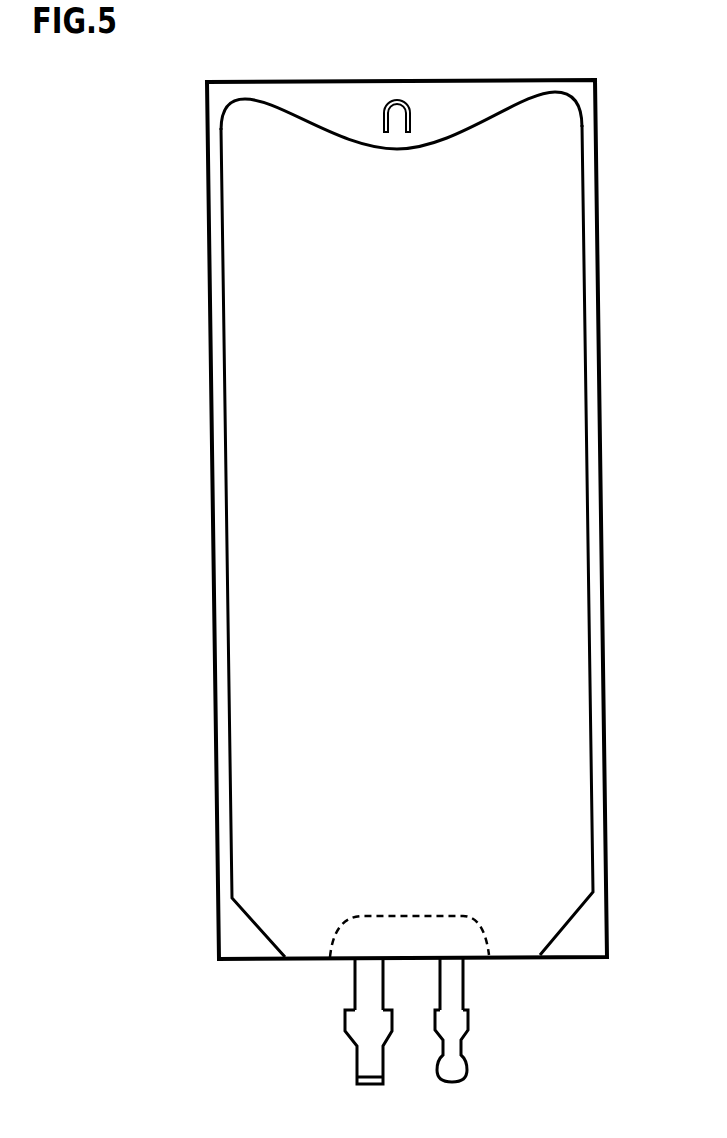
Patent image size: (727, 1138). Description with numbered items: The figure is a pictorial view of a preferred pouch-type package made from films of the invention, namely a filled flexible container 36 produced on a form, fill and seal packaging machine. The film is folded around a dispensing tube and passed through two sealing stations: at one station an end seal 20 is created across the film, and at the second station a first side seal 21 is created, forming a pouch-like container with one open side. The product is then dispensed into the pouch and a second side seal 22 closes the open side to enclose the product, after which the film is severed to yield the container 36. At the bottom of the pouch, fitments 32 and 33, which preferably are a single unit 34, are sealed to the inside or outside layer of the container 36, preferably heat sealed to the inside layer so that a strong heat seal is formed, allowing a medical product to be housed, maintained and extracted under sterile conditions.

The end seal 20 is at (458, 98).
The first side seal 21 is at (222, 347).
The second side seal 22 is at (602, 557).
The fitment 32 is at (465, 1000).
The fitment 33 is at (354, 992).
The single unit 34 is at (497, 1049).
The filled flexible container 36 is at (162, 463).